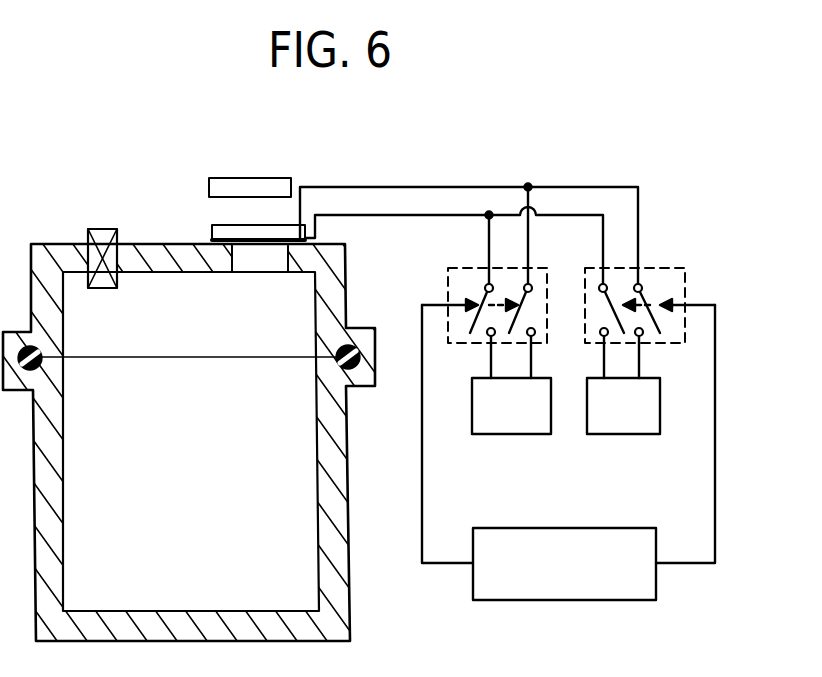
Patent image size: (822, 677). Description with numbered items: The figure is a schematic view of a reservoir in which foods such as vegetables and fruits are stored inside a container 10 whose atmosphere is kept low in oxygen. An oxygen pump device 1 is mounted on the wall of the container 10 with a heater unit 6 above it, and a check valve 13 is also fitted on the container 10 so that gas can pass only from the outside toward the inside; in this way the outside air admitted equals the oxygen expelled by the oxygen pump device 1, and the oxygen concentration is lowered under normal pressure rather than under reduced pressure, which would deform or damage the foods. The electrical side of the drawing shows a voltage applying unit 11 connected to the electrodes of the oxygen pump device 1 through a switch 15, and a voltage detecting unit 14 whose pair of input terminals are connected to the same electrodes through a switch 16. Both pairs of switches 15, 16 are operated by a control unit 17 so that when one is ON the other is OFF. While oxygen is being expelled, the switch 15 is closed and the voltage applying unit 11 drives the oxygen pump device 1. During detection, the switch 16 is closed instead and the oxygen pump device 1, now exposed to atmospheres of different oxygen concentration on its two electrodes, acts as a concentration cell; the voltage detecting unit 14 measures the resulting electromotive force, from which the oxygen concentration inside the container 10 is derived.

The oxygen pump device 1 is at (212, 227).
The heater unit 6 is at (220, 178).
The container 10 is at (348, 604).
The voltage applying unit 11 is at (500, 434).
The check valve 13 is at (87, 229).
The voltage detecting unit 14 is at (610, 434).
The switch 15 is at (453, 268).
The switch 16 is at (685, 275).
The control unit 17 is at (656, 587).